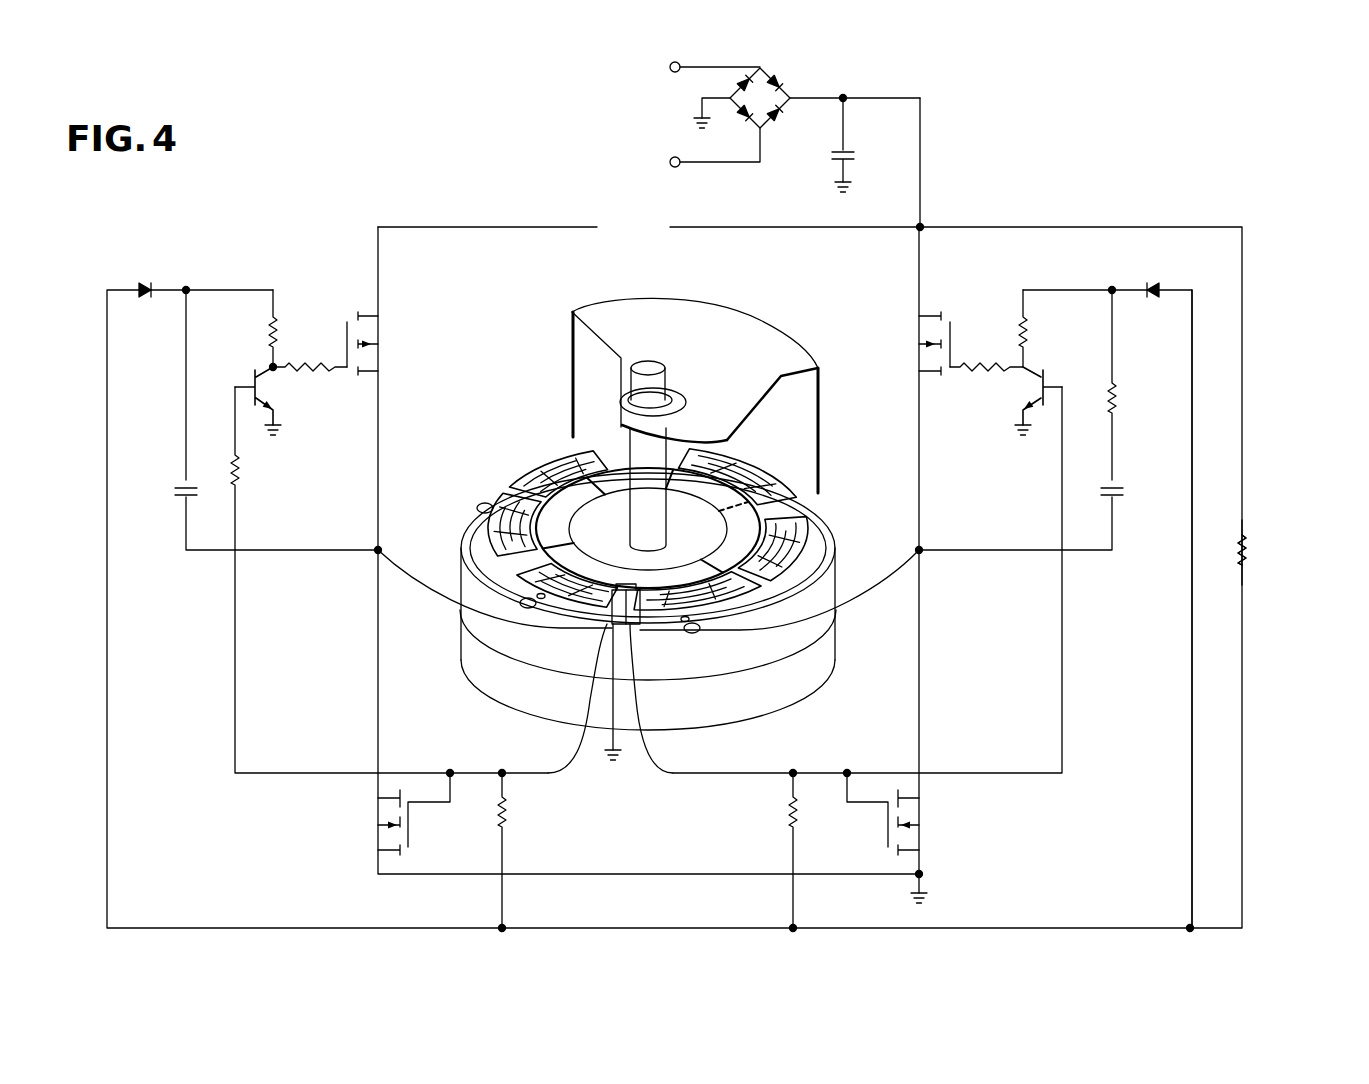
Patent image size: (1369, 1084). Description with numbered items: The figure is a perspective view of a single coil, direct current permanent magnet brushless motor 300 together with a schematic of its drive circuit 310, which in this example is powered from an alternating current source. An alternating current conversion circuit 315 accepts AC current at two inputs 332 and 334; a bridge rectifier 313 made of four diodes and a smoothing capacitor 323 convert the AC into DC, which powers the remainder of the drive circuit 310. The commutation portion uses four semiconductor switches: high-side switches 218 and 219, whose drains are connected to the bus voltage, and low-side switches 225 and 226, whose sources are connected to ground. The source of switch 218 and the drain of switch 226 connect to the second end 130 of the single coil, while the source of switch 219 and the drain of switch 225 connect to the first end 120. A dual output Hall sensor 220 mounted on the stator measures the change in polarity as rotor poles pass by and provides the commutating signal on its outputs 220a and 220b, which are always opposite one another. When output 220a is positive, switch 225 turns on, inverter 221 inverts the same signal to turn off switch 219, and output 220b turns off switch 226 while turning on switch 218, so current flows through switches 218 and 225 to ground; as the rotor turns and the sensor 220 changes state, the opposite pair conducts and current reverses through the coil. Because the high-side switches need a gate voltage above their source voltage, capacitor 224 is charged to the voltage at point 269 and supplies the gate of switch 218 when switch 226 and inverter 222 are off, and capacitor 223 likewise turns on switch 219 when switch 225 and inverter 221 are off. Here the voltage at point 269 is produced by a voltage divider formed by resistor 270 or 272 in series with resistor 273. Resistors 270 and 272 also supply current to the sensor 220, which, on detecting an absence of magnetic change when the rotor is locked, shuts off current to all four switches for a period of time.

The drive circuit 310 is at (1037, 148).
The bridge rectifier 313 is at (800, 76).
The alternating current conversion circuit 315 is at (628, 107).
The smoothing capacitor 323 is at (845, 150).
The input 332 is at (670, 67).
The input 334 is at (670, 163).
The single coil, direct current permanent magnet brushless motor 300 is at (691, 550).
The semiconductor switch 218 is at (372, 316).
The semiconductor switch 219 is at (928, 316).
The inverter 221 is at (1030, 377).
The inverter 222 is at (265, 380).
The capacitor 223 is at (1116, 486).
The capacitor 224 is at (184, 490).
The semiconductor switch 225 is at (920, 840).
The semiconductor switch 226 is at (378, 835).
The resistor 270 is at (505, 818).
The resistor 272 is at (790, 812).
The resistor 273 is at (1245, 555).
The point 269 is at (1190, 928).
The first end 120 is at (919, 550).
The second end 130 is at (378, 550).
The sensor 220 is at (630, 588).
The output 220a is at (667, 760).
The output 220b is at (565, 755).